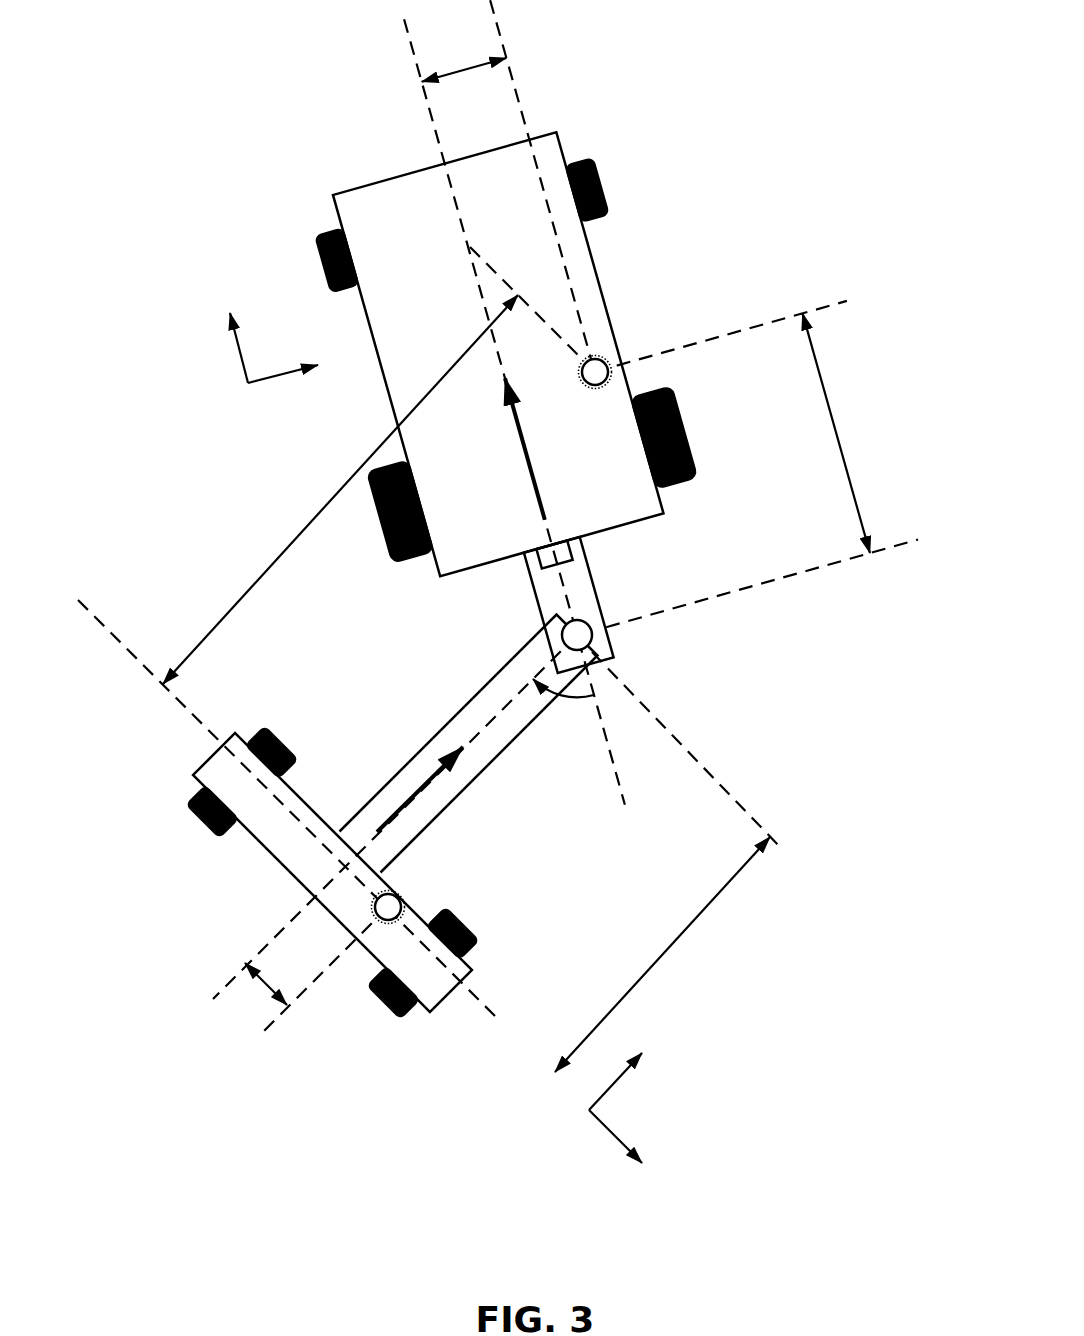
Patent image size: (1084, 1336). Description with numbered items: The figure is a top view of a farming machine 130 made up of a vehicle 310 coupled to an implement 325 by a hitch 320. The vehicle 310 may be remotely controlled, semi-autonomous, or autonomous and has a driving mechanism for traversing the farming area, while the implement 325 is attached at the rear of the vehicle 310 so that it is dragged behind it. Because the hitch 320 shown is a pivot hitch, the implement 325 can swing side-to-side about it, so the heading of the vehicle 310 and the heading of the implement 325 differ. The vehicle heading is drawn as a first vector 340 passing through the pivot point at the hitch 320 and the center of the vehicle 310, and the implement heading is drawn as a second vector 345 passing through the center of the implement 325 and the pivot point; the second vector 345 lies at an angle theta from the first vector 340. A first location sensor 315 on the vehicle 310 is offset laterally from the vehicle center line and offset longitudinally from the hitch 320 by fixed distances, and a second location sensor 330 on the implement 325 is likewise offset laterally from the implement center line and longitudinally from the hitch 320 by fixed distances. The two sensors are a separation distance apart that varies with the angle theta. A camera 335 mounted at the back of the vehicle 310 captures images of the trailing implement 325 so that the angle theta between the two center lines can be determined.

The farming machine 130 is at (129, 82).
The vehicle 310 is at (342, 192).
The first location sensor 315 is at (605, 358).
The hitch 320 is at (563, 625).
The implement 325 is at (207, 760).
The second location sensor 330 is at (404, 902).
The camera 335 is at (557, 545).
The first vector 340 is at (550, 445).
The second vector 345 is at (397, 811).